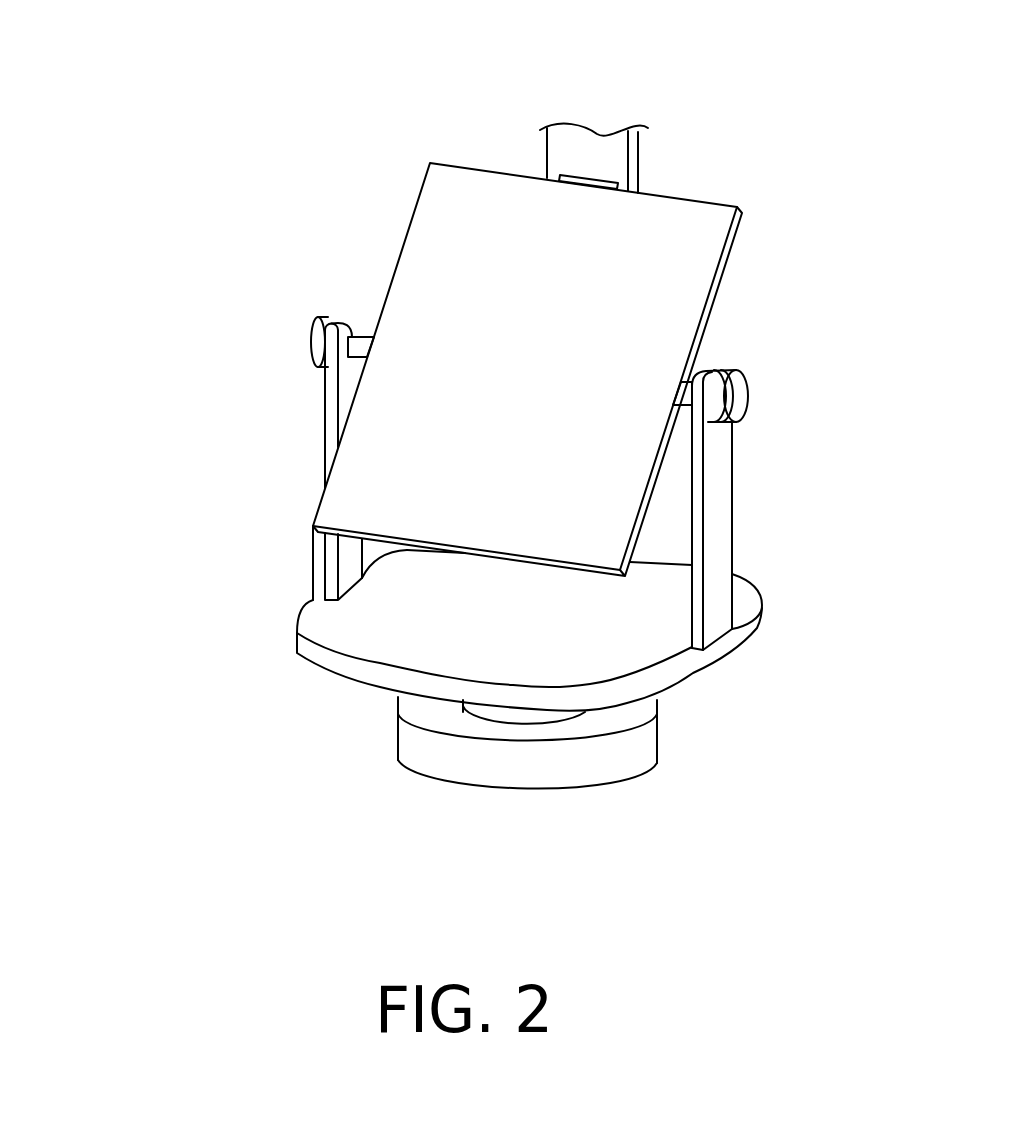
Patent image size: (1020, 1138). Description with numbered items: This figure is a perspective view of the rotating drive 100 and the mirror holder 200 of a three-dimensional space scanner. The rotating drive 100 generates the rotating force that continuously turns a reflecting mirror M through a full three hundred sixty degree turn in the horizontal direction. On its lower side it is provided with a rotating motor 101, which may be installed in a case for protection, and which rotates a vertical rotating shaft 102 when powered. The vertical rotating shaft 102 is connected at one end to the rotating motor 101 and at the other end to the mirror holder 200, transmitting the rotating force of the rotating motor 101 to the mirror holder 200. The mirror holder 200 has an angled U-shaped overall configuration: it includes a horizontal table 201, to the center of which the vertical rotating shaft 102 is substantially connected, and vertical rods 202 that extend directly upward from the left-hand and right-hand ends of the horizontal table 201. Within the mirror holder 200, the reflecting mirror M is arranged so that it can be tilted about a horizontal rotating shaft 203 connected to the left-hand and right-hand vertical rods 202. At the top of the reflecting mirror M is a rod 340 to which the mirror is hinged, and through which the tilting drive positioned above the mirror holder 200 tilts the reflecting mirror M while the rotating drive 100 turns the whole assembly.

The reflecting mirror M is at (712, 242).
The rod 340 is at (595, 144).
The mirror holder 200 is at (208, 440).
The horizontal table 201 is at (423, 641).
The vertical rods 202 is at (722, 498).
The horizontal rotating shaft 203 is at (357, 336).
The rotating drive 100 is at (668, 734).
The rotating motor 101 is at (562, 788).
The vertical rotating shaft 102 is at (492, 712).